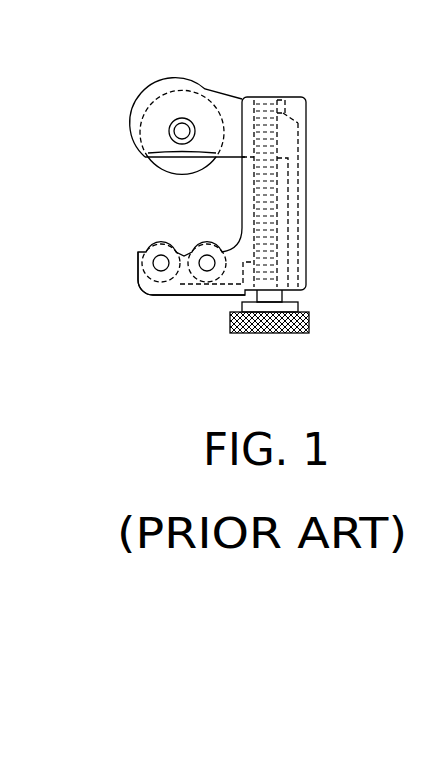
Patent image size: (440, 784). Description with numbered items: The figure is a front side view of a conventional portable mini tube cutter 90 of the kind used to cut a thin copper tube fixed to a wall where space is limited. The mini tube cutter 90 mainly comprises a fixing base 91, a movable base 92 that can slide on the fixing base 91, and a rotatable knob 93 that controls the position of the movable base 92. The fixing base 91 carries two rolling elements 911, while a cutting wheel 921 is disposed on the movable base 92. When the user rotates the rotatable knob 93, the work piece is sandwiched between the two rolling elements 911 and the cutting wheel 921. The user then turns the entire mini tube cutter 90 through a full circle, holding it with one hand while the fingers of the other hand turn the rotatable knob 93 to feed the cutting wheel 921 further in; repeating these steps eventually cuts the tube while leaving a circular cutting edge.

The mini tube cutter 90 is at (307, 92).
The movable base 92 is at (229, 99).
The cutting wheel 921 is at (165, 170).
The fixing base 91 is at (187, 295).
The rolling elements 911 is at (152, 247).
The rotatable knob 93 is at (286, 305).